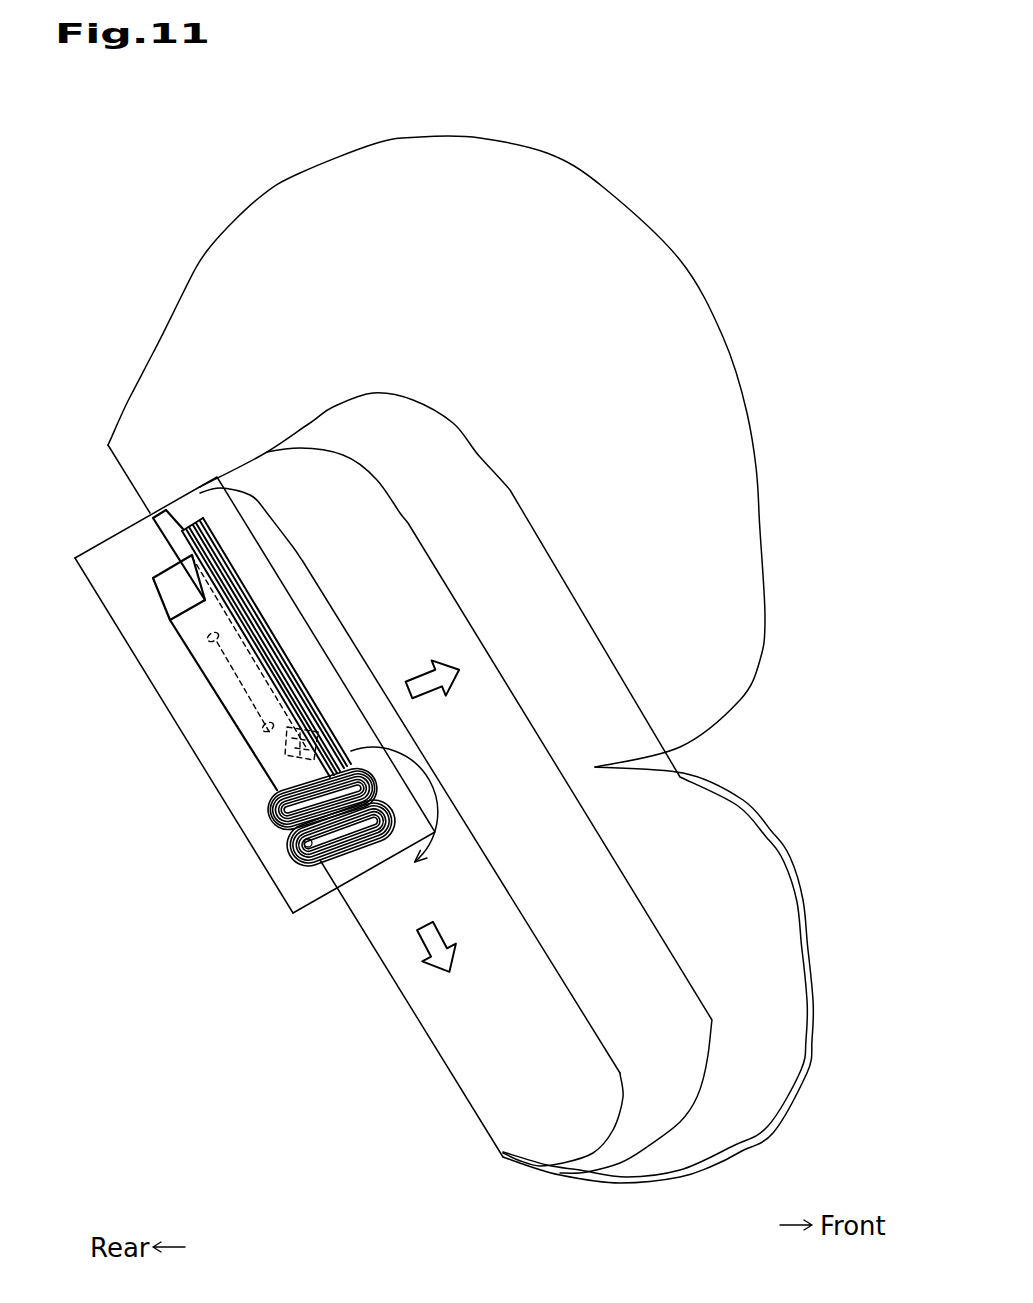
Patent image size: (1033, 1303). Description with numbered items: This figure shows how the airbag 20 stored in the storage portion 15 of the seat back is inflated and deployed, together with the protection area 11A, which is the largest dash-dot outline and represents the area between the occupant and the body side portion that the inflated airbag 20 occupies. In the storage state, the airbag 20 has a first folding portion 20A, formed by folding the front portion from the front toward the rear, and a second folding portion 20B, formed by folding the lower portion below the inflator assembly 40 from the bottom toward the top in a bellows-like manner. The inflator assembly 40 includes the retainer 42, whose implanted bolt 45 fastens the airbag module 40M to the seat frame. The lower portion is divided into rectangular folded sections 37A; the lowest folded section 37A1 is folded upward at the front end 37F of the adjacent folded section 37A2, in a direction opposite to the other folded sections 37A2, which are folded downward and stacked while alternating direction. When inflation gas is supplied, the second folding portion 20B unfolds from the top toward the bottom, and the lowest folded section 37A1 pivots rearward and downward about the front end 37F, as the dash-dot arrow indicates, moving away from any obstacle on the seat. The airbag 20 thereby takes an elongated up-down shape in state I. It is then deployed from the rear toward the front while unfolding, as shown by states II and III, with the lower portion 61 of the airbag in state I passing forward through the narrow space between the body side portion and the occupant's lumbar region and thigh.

The protection area 11A is at (605, 186).
The state I is at (305, 560).
The state II is at (410, 523).
The state III is at (512, 490).
The lower portion of the airbag in state (I) 61 is at (622, 1073).
The airbag module 40M is at (160, 749).
The storage portion 15 is at (227, 806).
The front end of the adjacent folded section 37F is at (395, 795).
The inflator assembly 40 is at (163, 650).
The retainer 42 is at (163, 604).
The bolt 45 is at (206, 643).
The airbag 20 is at (259, 673).
The first folding portion 20A is at (278, 640).
The second folding portion 20B is at (287, 849).
The folded sections 37A is at (333, 839).
The lowest folded section 37A1 is at (311, 850).
The other folded sections 37A2 is at (374, 850).